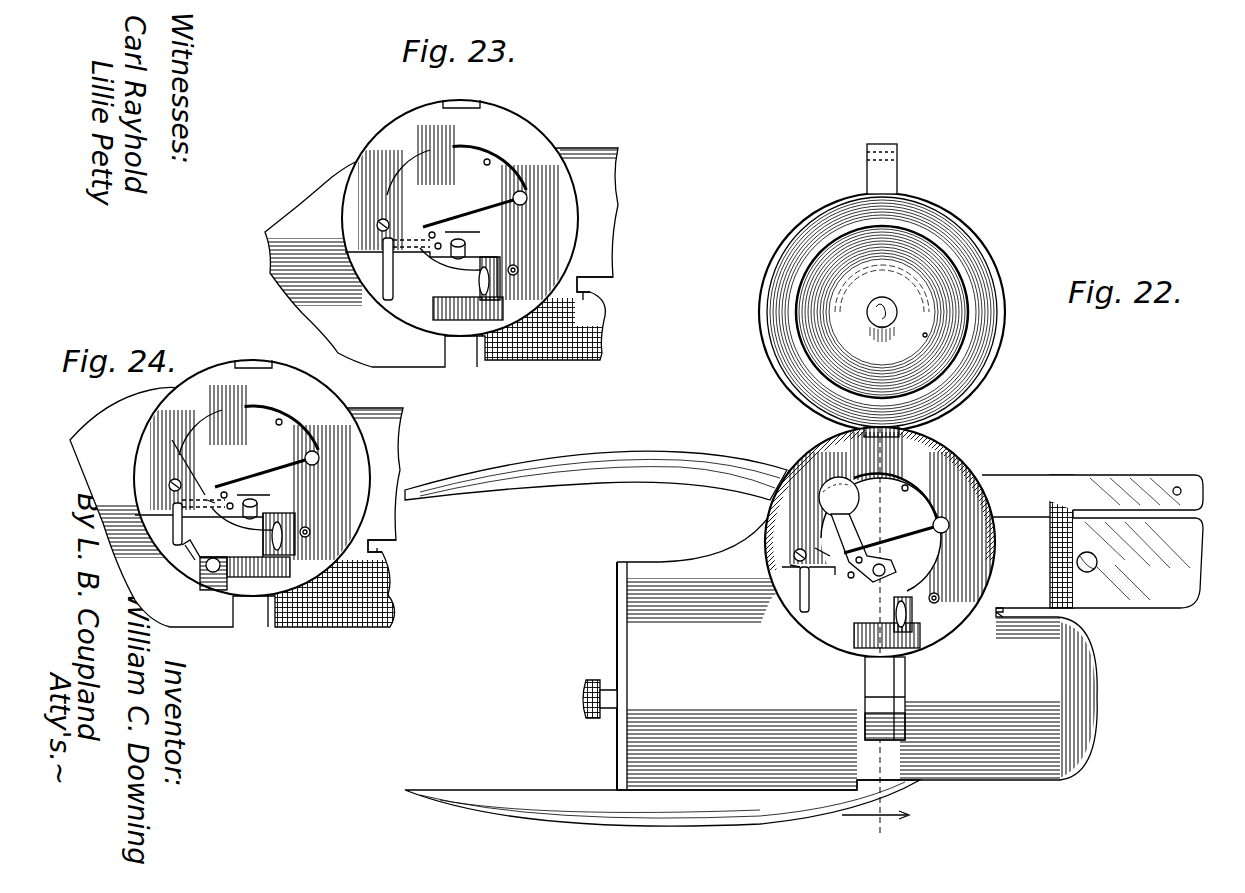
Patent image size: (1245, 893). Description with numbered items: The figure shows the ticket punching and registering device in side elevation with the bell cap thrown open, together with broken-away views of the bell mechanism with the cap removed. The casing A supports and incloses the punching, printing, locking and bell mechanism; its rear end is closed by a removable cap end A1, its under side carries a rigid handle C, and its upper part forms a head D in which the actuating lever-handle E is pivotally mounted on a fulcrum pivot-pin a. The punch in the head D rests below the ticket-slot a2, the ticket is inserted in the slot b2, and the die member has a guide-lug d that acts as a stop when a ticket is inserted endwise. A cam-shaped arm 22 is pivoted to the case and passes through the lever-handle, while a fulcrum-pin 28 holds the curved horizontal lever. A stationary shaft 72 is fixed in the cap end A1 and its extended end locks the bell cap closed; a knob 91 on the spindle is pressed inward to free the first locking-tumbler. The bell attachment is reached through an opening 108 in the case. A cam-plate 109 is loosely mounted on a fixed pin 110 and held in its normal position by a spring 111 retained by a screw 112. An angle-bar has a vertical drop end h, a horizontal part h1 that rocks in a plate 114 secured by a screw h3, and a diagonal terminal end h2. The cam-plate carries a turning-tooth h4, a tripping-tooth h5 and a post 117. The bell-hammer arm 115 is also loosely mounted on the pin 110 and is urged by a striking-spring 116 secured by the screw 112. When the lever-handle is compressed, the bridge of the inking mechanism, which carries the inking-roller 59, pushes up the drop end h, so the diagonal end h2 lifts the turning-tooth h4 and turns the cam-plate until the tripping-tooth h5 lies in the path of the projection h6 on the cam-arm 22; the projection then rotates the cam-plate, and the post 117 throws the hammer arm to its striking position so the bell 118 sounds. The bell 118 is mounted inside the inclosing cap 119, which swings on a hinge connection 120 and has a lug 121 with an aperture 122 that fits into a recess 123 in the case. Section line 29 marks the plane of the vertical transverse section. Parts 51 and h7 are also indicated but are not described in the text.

In FIG. 23, the cam-shaped arm 22 is at (526, 280).
In FIG. 24, the cam-shaped arm 22 is at (312, 528).
In FIG. 22, the cam-shaped arm 22 is at (949, 607).
In FIG. 23, the fulcrum-pin 28 is at (519, 269).
In FIG. 24, the fulcrum-pin 28 is at (311, 535).
In FIG. 22, the fulcrum-pin 28 is at (940, 596).
In FIG. 22, the section line 29 is at (875, 824).
In FIG. 24, the wedge block 51 is at (176, 552).
In FIG. 24, the inking-roller 59 is at (196, 572).
In FIG. 22, the stationary shaft 72 is at (904, 706).
In FIG. 22, the knob 91 is at (590, 722).
In FIG. 23, the opening 108 is at (408, 313).
In FIG. 24, the opening 108 is at (237, 587).
In FIG. 22, the opening 108 is at (813, 647).
In FIG. 23, the cam-plate 109 is at (482, 232).
In FIG. 24, the cam-plate 109 is at (270, 495).
In FIG. 22, the cam-plate 109 is at (898, 545).
In FIG. 23, the fixed pin 110 is at (458, 240).
In FIG. 24, the fixed pin 110 is at (250, 500).
In FIG. 22, the fixed pin 110 is at (915, 577).
In FIG. 23, the spring 111 is at (480, 193).
In FIG. 24, the spring 111 is at (288, 450).
In FIG. 22, the spring 111 is at (901, 526).
In FIG. 23, the screw 112 is at (528, 198).
In FIG. 24, the screw 112 is at (288, 460).
In FIG. 22, the screw 112 is at (949, 527).
In FIG. 23, the plate 114 is at (432, 158).
In FIG. 24, the plate 114 is at (180, 457).
In FIG. 22, the plate 114 is at (800, 550).
In FIG. 22, the bell-hammer arm 115 is at (840, 530).
In FIG. 23, the striking-spring 116 is at (481, 148).
In FIG. 24, the striking-spring 116 is at (274, 405).
In FIG. 22, the striking-spring 116 is at (856, 478).
In FIG. 23, the post 117 is at (484, 162).
In FIG. 24, the post 117 is at (240, 402).
In FIG. 22, the gong or bell 118 is at (945, 348).
In FIG. 22, the inclosing cap 119 is at (770, 358).
In FIG. 22, the hinge connection 120 is at (892, 443).
In FIG. 22, the lug 121 is at (884, 147).
In FIG. 22, the aperture 122 is at (867, 155).
In FIG. 23, the recess 123 is at (462, 367).
In FIG. 24, the recess 123 is at (251, 618).
In FIG. 22, the recess 123 is at (870, 687).
In FIG. 23, the casing A is at (442, 266).
In FIG. 24, the casing A is at (237, 525).
In FIG. 22, the casing A is at (857, 630).
In FIG. 22, the removable cap end A1 is at (620, 653).
In FIG. 22, the rigid handle C is at (510, 797).
In FIG. 22, the head D is at (1143, 475).
In FIG. 22, the actuating lever-handle E is at (572, 473).
In FIG. 22, the fulcrum pivot-pin a is at (1094, 568).
In FIG. 22, the ticket-slot a2 is at (1170, 516).
In FIG. 23, the slot b2 is at (593, 288).
In FIG. 24, the slot b2 is at (400, 545).
In FIG. 22, the slot b2 is at (1050, 612).
In FIG. 23, the guide-lug d is at (583, 300).
In FIG. 24, the guide-lug d is at (378, 550).
In FIG. 22, the guide-lug d is at (1003, 618).
In FIG. 23, the vertical end part h is at (385, 300).
In FIG. 24, the vertical end part h is at (215, 458).
In FIG. 22, the vertical end part h is at (800, 612).
In FIG. 23, the horizontal part h1 is at (393, 215).
In FIG. 24, the horizontal part h1 is at (173, 543).
In FIG. 23, the terminal end h2 is at (430, 232).
In FIG. 24, the terminal end h2 is at (221, 480).
In FIG. 23, the screw h3 is at (380, 224).
In FIG. 24, the screw h3 is at (172, 485).
In FIG. 22, the screw h3 is at (793, 555).
In FIG. 24, the turning-tooth h4 is at (207, 500).
In FIG. 22, the turning-tooth h4 is at (785, 566).
In FIG. 23, the tripping-tooth h5 is at (506, 249).
In FIG. 24, the tripping-tooth h5 is at (296, 529).
In FIG. 23, the projection h6 is at (489, 276).
In FIG. 24, the projection h6 is at (296, 540).
In FIG. 22, the projection h6 is at (904, 622).
In FIG. 24, the screw h7 is at (222, 563).